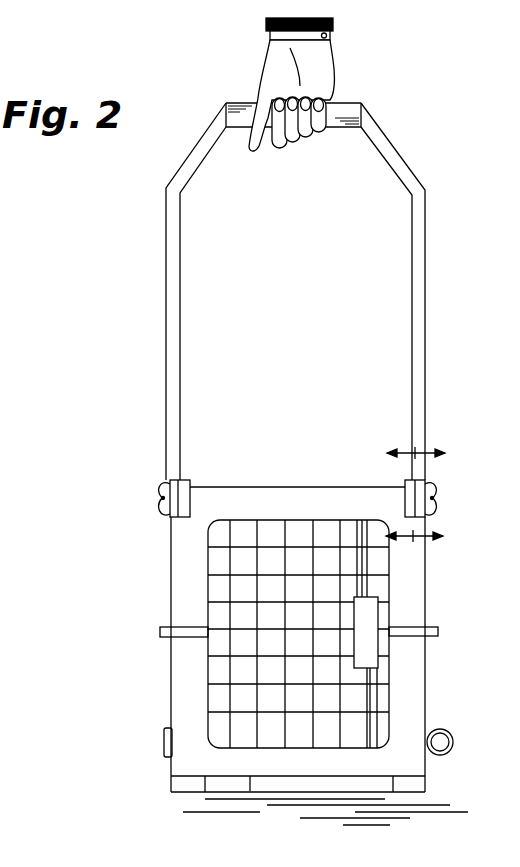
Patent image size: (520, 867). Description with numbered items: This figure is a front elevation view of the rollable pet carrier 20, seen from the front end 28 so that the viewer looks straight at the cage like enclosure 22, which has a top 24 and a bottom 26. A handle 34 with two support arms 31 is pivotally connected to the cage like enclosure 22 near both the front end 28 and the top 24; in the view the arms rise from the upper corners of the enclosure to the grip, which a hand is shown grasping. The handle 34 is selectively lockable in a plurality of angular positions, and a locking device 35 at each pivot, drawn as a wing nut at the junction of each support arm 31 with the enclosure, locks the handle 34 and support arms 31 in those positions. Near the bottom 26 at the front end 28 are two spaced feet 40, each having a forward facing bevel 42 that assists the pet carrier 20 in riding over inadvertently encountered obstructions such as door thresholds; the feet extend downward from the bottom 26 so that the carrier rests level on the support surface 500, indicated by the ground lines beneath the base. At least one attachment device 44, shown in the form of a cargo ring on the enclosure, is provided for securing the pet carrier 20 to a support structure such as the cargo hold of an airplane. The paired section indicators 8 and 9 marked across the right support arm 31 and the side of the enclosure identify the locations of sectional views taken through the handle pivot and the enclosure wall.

The section line 8 is at (449, 494).
The section line 9 is at (408, 494).
The pet carrier 20 is at (108, 274).
The cage like enclosure 22 is at (276, 443).
The top 24 is at (318, 483).
The bottom 26 is at (250, 793).
The front end 28 is at (404, 604).
The support arms 31 is at (170, 345).
The handle 34 is at (344, 103).
The locking device 35 is at (160, 490).
The feet 40 is at (172, 779).
The forward facing bevel 42 is at (176, 789).
The attachment device 44 is at (166, 740).
The support surface 500 is at (195, 800).